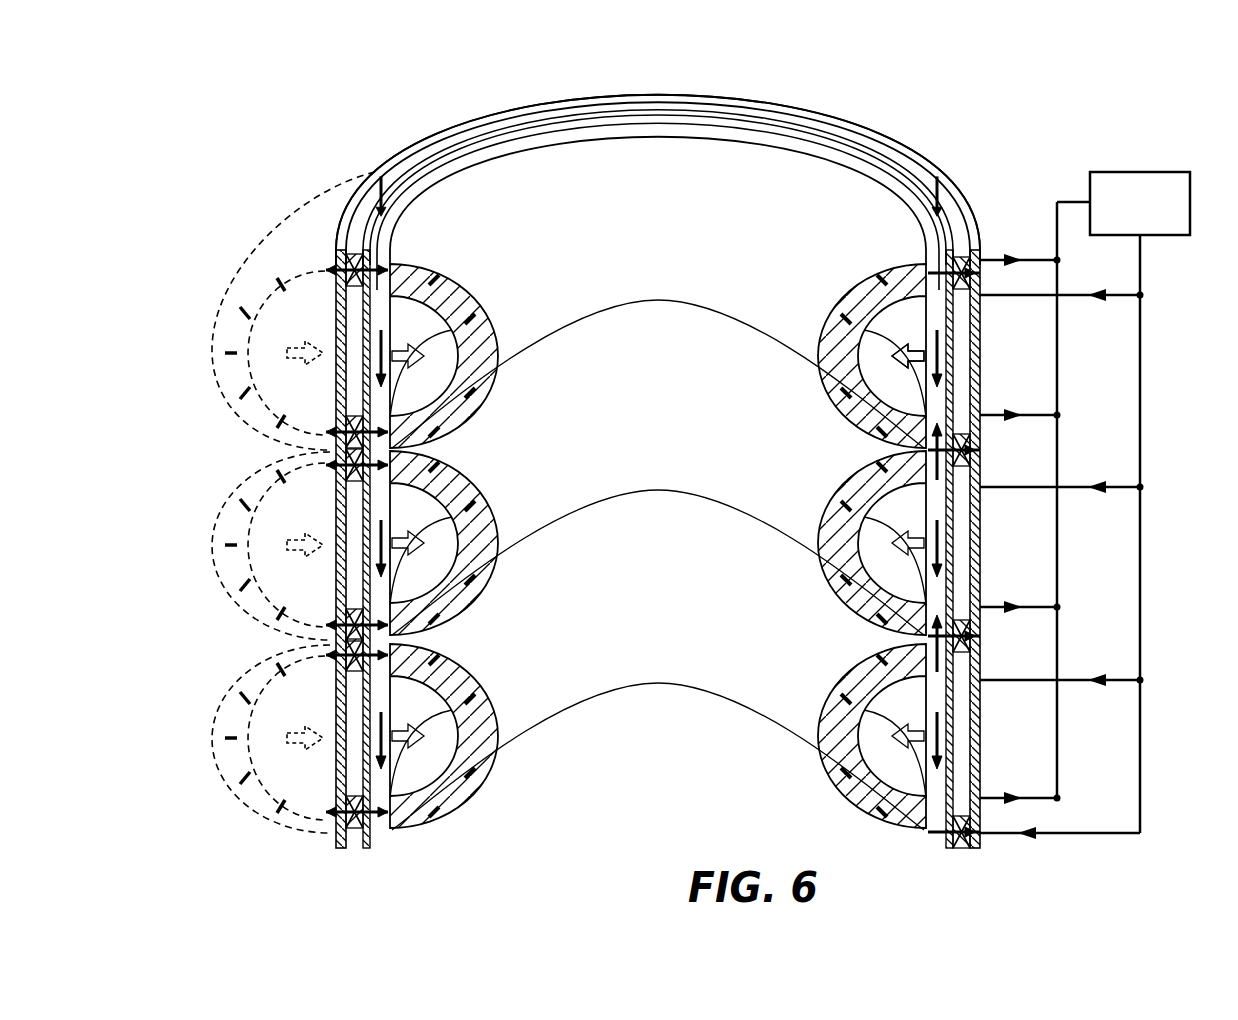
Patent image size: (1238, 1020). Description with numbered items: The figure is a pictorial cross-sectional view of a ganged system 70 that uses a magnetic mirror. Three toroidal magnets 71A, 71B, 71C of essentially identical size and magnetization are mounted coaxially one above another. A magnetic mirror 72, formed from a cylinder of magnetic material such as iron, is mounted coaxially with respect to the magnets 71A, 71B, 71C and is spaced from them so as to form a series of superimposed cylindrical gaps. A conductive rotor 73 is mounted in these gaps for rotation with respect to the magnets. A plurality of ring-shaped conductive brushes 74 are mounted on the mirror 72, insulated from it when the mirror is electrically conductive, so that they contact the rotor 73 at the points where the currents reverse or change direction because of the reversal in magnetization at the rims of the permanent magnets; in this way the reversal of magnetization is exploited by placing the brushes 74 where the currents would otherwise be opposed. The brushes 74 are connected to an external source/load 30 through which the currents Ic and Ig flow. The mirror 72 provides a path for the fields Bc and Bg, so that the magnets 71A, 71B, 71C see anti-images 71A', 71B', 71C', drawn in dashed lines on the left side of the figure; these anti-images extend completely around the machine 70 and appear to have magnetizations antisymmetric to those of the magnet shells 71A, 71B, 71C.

The ganged system 70 is at (577, 92).
The magnetic mirror 72 is at (902, 160).
The conductive rotor 73 is at (852, 158).
The ring-shaped conductive brushes 74 is at (960, 232).
The source/load 30 is at (1130, 172).
The toroidal magnet 71A is at (658, 327).
The toroidal magnet 71B is at (658, 467).
The toroidal magnet 71C is at (658, 660).
The anti-image 71A' is at (250, 311).
The anti-image 71B' is at (229, 546).
The anti-image 71C' is at (225, 739).
The field Bc is at (915, 345).
The coil current Ic is at (978, 349).
The gap current Ig is at (934, 484).
The field Bg is at (976, 638).